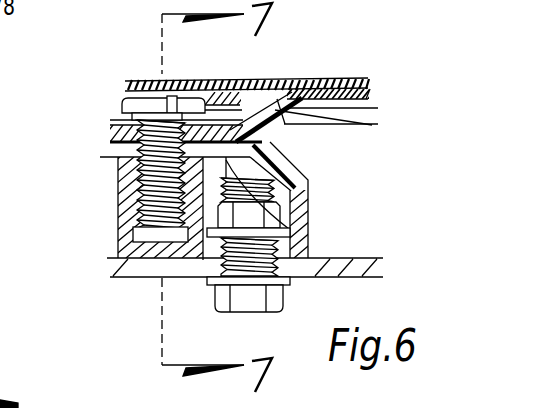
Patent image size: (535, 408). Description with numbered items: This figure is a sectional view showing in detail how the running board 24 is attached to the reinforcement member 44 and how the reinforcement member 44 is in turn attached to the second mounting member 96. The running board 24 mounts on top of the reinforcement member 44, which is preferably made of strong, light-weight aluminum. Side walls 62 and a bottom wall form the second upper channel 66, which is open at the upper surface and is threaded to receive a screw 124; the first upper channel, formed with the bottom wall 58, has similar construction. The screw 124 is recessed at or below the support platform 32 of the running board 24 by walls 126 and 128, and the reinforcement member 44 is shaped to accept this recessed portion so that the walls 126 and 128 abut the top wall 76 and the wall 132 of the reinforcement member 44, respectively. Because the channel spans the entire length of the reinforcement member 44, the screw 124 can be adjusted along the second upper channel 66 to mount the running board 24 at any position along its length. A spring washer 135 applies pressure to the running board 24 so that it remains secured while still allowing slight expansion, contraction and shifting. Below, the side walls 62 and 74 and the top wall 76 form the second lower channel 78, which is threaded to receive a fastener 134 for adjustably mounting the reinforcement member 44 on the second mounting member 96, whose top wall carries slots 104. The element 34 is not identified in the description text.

The running board 24 is at (400, 86).
The support platform 32 is at (366, 92).
The pad 34 is at (361, 84).
The reinforcement member 44 is at (377, 156).
The bottom wall 58 is at (182, 250).
The side walls 62 is at (127, 201).
The second upper channel 66 is at (147, 234).
The side wall 74 is at (298, 183).
The top wall 76 is at (289, 232).
The second lower channel 78 is at (283, 197).
The second mounting member 96 is at (371, 234).
The slots 104 is at (193, 272).
The screw 124 is at (149, 98).
The wall 126 is at (223, 118).
The wall 128 is at (249, 112).
The wall 132 is at (288, 128).
The fastener 134 is at (246, 314).
The spring washer 135 is at (128, 102).